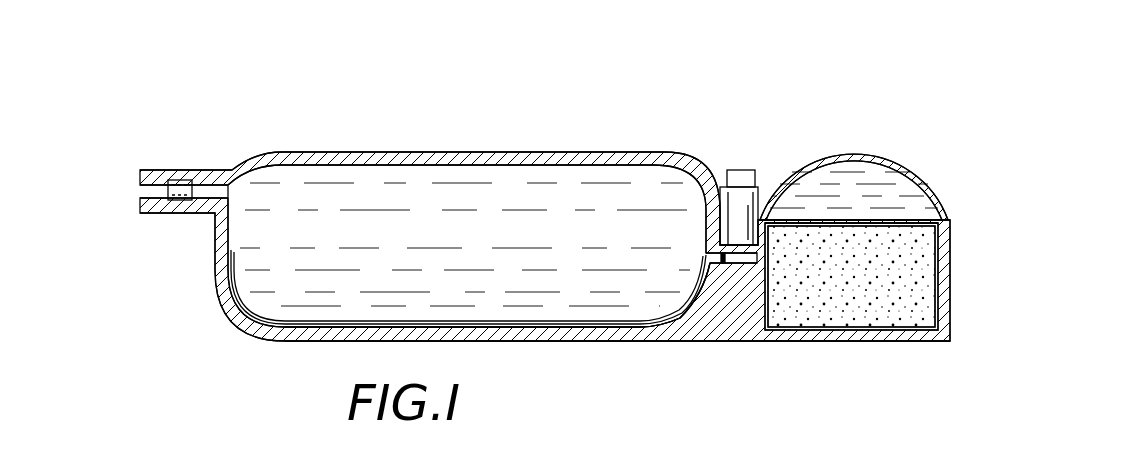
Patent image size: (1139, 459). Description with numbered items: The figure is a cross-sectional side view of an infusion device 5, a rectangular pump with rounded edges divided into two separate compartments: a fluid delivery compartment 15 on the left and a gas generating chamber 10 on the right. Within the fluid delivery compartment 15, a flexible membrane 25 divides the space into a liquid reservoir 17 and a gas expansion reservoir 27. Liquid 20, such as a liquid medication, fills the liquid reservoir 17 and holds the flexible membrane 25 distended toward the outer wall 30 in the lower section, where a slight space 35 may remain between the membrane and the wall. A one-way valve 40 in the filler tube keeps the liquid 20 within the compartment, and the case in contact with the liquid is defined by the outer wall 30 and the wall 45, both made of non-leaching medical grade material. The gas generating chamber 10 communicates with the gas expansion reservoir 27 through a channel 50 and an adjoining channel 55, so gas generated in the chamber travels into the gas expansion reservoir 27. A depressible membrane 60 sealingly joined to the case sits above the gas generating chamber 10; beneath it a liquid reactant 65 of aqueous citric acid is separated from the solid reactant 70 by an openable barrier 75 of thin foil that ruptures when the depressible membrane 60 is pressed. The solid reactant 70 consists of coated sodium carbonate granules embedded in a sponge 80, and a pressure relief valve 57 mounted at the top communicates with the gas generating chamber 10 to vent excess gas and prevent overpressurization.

The infusion device 5 is at (565, 80).
The gas generating chamber 10 is at (1028, 101).
The fluid delivery compartment 15 is at (221, 100).
The liquid reservoir 17 is at (420, 180).
The liquid 20 is at (280, 190).
The flexible membrane 25 is at (218, 290).
The gas expansion reservoir 27 is at (450, 345).
The outer wall 30 is at (308, 341).
The space 35 is at (682, 312).
The one-way valve 40 is at (176, 180).
The wall 45 is at (578, 152).
The channel 50 is at (733, 263).
The channel 55 is at (750, 263).
The pressure relief valve 57 is at (750, 170).
The depressible membrane 60 is at (819, 160).
The liquid reactant 65 is at (862, 175).
The solid reactant 70 is at (800, 313).
The openable barrier 75 is at (912, 218).
The sponge 80 is at (908, 313).